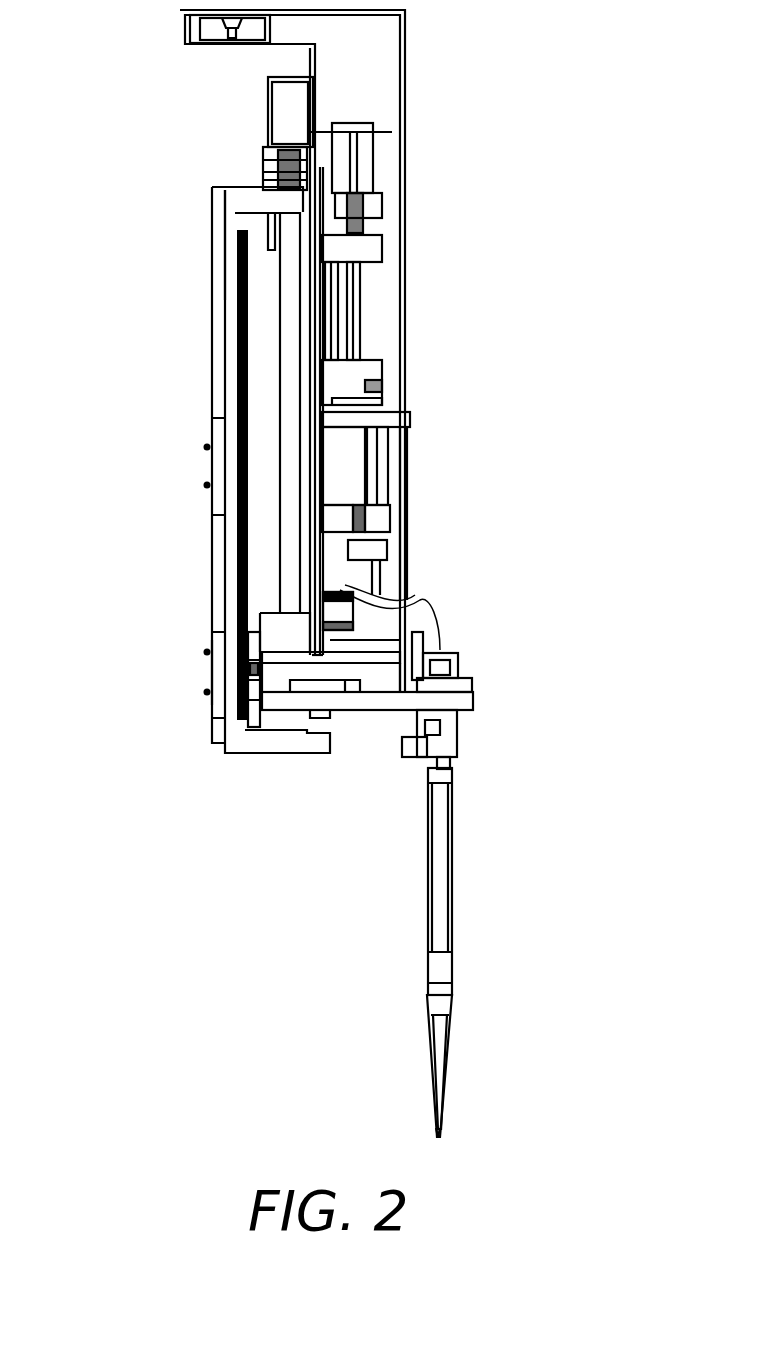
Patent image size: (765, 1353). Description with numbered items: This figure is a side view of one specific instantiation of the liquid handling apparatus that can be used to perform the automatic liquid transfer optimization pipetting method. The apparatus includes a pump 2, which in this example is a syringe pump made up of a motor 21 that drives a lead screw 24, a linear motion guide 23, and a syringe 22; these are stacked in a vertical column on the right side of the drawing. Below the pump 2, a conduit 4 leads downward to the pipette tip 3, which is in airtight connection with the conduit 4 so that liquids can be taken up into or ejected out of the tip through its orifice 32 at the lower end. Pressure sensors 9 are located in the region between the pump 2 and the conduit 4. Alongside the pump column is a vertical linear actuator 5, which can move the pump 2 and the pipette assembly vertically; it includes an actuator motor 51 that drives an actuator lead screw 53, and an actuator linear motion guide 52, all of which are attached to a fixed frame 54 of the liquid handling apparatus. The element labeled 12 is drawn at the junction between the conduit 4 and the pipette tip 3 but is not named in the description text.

The pump 2 is at (526, 127).
The pipette tip 3 is at (490, 995).
The conduit 4 is at (445, 875).
The vertical linear actuator 5 is at (97, 90).
The pressure sensors 9 is at (338, 617).
The tip holder 12 is at (426, 983).
The motor 21 is at (367, 167).
The syringe 22 is at (380, 460).
The linear motion guide 23 is at (368, 383).
The lead screw 24 is at (350, 327).
The orifice 32 is at (434, 1133).
The actuator motor 51 is at (285, 113).
The actuator linear motion guide 52 is at (268, 652).
The actuator lead screw 53 is at (285, 304).
The fixed frame 54 is at (210, 672).